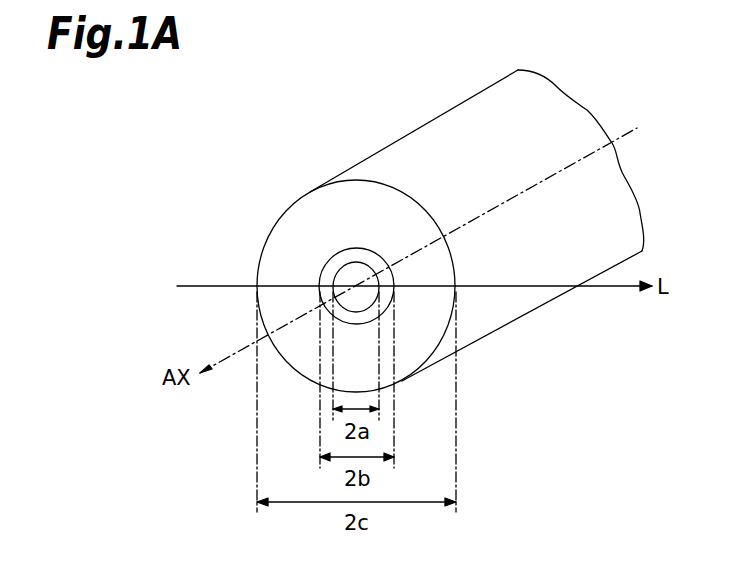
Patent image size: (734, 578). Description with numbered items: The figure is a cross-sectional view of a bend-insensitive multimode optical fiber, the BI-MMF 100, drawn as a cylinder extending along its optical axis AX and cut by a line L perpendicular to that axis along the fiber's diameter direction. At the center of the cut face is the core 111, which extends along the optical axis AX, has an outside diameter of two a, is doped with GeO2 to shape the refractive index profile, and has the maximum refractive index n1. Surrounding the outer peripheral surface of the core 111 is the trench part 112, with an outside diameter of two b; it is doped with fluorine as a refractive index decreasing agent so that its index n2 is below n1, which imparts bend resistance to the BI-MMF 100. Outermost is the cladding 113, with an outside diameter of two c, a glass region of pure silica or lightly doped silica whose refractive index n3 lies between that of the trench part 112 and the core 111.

The BI-MMF 100 is at (433, 110).
The core 111 is at (350, 277).
The trench part 112 is at (373, 263).
The cladding 113 is at (270, 258).